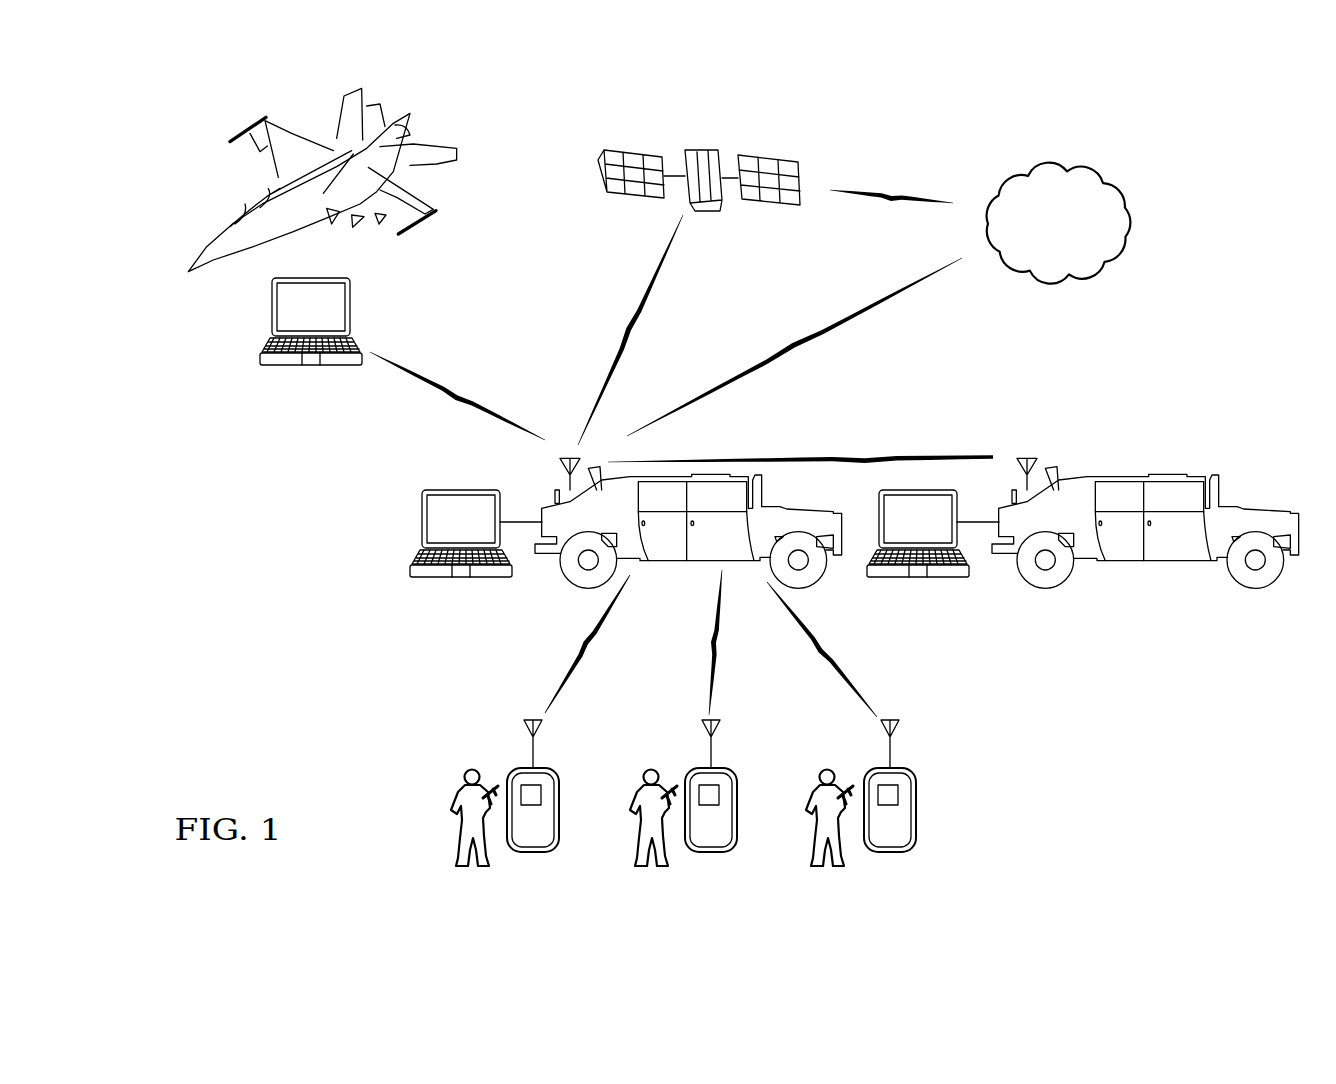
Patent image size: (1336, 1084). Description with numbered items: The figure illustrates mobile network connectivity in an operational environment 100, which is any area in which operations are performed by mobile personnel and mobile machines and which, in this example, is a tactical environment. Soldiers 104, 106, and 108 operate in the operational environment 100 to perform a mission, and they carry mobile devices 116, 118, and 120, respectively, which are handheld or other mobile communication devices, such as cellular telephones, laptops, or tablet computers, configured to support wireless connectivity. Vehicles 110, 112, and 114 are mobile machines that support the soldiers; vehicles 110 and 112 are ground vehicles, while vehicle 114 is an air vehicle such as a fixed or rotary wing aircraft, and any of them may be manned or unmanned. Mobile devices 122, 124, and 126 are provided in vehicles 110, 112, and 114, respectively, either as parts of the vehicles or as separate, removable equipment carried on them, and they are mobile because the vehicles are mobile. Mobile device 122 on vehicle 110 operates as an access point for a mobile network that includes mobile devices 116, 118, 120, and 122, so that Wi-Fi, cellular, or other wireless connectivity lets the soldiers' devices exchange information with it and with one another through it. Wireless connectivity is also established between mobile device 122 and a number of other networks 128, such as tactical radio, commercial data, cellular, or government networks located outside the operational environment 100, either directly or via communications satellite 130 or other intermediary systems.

The operational environment 100 is at (333, 665).
The soldier 104 is at (455, 825).
The soldier 106 is at (633, 825).
The soldier 108 is at (810, 825).
The vehicle 110 is at (677, 563).
The vehicle 112 is at (1160, 563).
The vehicle 114 is at (206, 250).
The mobile device 116 is at (532, 853).
The mobile device 118 is at (711, 853).
The mobile device 120 is at (890, 853).
The mobile device 122 is at (460, 580).
The mobile device 124 is at (918, 580).
The mobile device 126 is at (312, 366).
The number of other networks 128 is at (1058, 162).
The communications satellite 130 is at (696, 150).